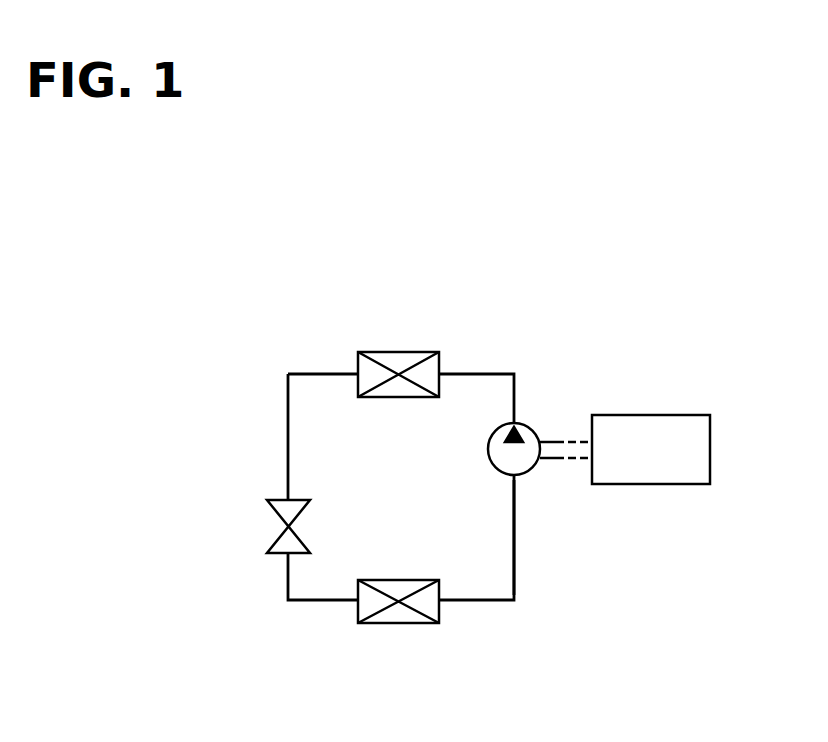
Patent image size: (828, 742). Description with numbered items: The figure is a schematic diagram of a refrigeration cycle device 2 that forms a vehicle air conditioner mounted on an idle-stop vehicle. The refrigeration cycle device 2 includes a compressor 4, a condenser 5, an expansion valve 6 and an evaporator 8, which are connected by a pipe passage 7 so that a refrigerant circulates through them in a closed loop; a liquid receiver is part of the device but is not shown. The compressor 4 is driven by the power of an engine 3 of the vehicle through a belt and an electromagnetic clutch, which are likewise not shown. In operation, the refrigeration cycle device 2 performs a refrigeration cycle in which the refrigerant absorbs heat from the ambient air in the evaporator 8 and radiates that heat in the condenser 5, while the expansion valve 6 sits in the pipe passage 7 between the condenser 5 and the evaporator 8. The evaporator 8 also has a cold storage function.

The refrigeration cycle device 2 is at (485, 356).
The engine 3 is at (640, 415).
The compressor 4 is at (524, 427).
The condenser 5 is at (394, 352).
The expansion valve 6 is at (280, 500).
The pipe passage 7 is at (516, 572).
The evaporator 8 is at (415, 624).